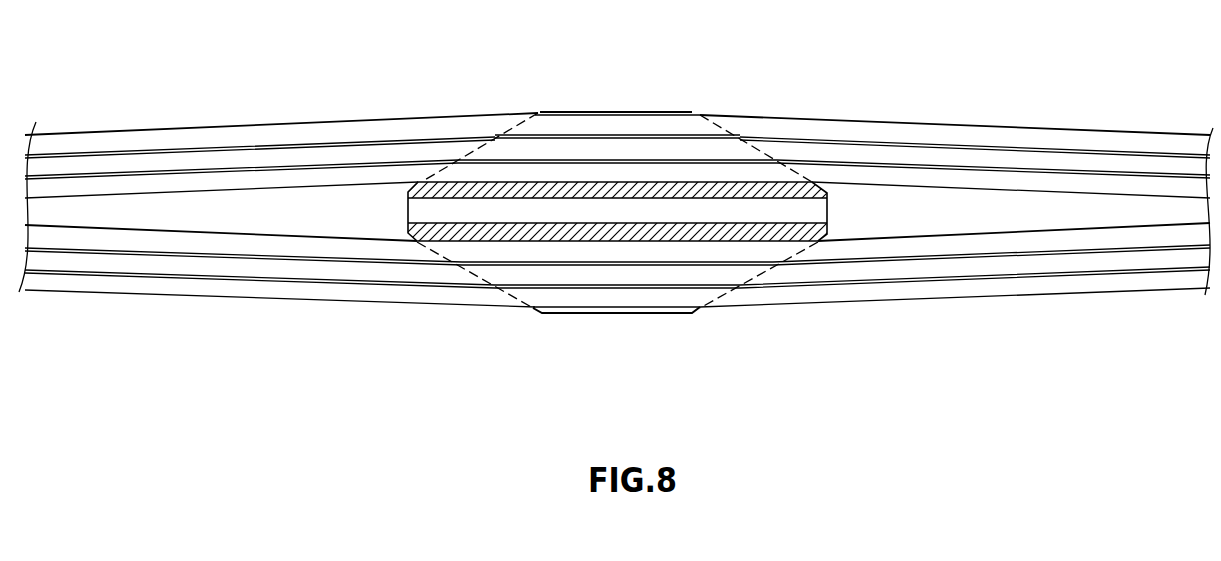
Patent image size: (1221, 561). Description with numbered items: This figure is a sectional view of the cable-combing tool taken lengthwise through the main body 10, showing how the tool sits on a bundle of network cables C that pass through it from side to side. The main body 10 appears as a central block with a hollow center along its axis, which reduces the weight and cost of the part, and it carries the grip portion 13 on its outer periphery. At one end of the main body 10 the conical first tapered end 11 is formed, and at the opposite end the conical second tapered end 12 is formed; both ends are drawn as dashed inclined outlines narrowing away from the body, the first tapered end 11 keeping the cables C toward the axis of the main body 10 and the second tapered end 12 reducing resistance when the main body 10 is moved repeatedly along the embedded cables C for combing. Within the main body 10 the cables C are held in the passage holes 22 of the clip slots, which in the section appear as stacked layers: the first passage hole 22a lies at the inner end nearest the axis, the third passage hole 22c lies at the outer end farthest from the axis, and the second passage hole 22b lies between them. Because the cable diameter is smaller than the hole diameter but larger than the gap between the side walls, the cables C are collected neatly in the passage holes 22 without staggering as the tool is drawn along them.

The network cable C is at (213, 183).
The main body 10 is at (536, 104).
The first tapered end 11 is at (424, 181).
The second tapered end 12 is at (811, 181).
The grip portion 13 is at (570, 315).
The passage holes 22 is at (720, 36).
The first passage hole 22a is at (548, 161).
The second passage hole 22b is at (614, 139).
The third passage hole 22c is at (677, 116).